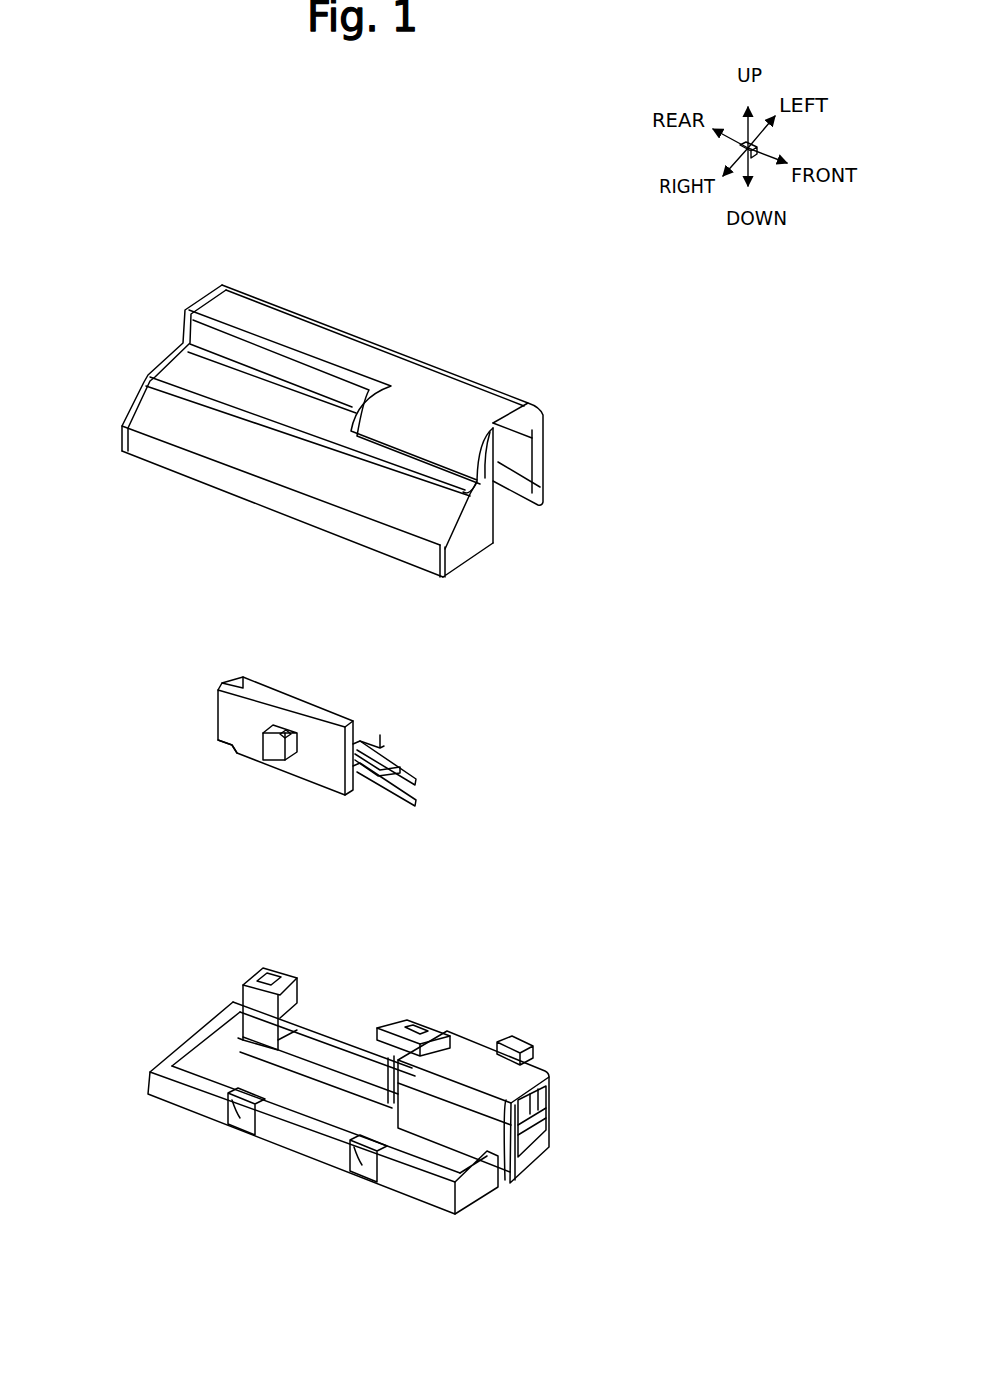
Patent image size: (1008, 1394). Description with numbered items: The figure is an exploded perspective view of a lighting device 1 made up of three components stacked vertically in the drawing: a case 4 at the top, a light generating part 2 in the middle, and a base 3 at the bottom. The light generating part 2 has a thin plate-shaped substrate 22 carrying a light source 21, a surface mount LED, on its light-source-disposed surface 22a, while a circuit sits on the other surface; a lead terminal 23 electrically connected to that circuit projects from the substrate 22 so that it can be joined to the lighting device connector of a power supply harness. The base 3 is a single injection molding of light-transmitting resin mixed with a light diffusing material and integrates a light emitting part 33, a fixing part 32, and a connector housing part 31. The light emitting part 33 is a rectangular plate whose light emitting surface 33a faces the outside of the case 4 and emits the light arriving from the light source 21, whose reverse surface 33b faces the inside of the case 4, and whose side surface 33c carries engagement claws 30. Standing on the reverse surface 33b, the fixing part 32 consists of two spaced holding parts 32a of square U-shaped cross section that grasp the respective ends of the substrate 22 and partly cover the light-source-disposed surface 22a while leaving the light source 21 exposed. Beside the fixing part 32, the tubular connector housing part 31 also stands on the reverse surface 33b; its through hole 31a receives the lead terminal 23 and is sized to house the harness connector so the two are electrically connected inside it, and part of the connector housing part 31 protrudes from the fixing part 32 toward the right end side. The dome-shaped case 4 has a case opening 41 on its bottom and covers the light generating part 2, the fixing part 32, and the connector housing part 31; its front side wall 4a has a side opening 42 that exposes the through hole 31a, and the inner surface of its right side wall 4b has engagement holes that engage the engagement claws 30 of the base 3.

The lighting device 1 is at (531, 222).
The light generating part 2 is at (401, 693).
The light source 21 is at (277, 750).
The substrate 22 is at (287, 700).
The light-source-disposed surface 22a is at (233, 718).
The lead terminal 23 is at (410, 775).
The base 3 is at (584, 996).
The engagement claws 30 is at (236, 1118).
The connector housing part 31 is at (466, 1050).
The through hole 31a is at (556, 1119).
The fixing part 32 is at (454, 968).
The holding parts 32a is at (262, 977).
The light emitting part 33 is at (167, 1068).
The light emitting surface 33a is at (185, 1127).
The reverse surface 33b is at (213, 1066).
The side surface 33c is at (440, 1225).
The case 4 is at (484, 383).
The front side wall 4a is at (476, 546).
The right side wall 4b is at (134, 453).
The case opening 41 is at (325, 543).
The side opening 42 is at (514, 476).